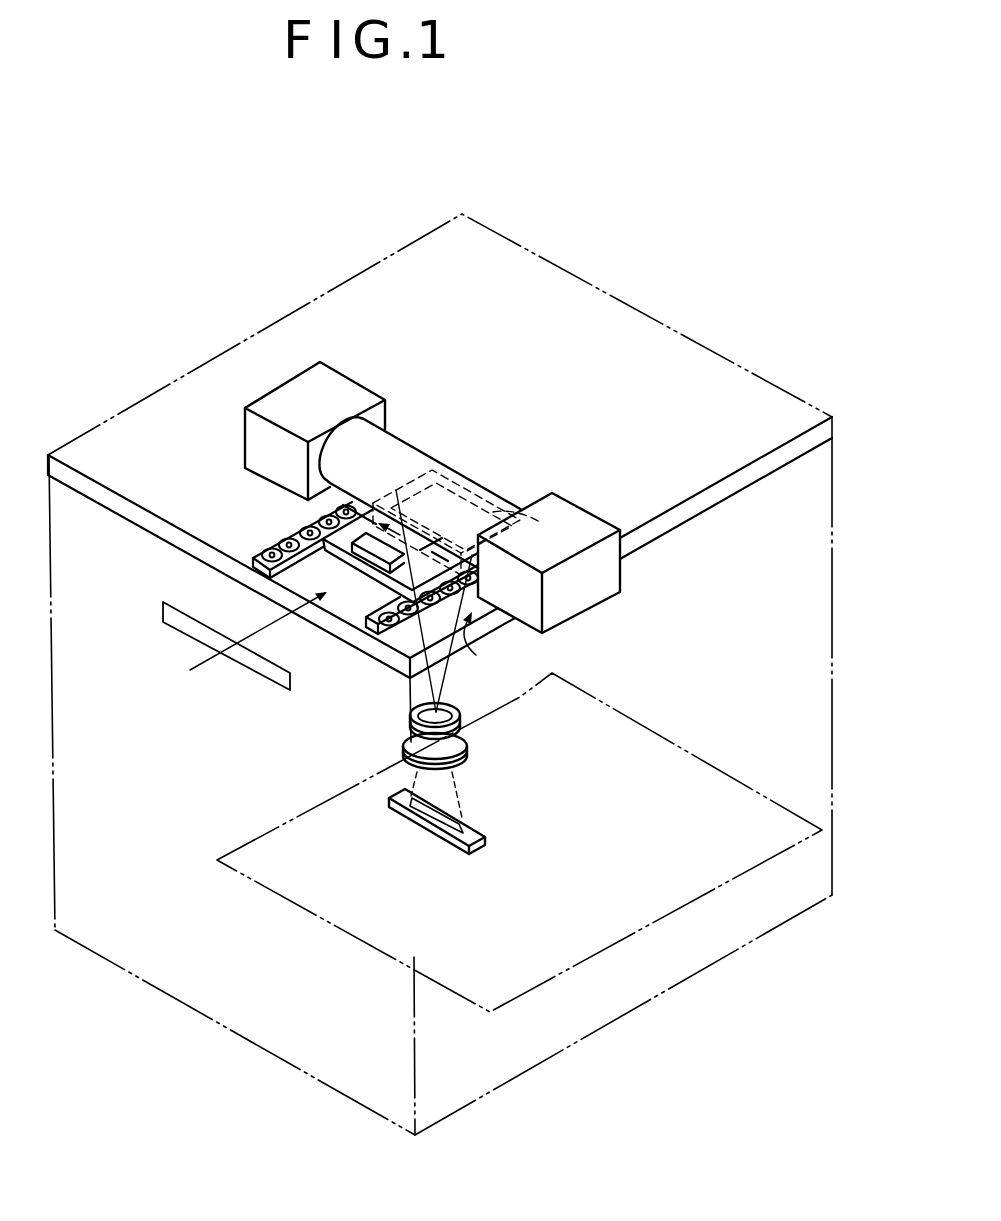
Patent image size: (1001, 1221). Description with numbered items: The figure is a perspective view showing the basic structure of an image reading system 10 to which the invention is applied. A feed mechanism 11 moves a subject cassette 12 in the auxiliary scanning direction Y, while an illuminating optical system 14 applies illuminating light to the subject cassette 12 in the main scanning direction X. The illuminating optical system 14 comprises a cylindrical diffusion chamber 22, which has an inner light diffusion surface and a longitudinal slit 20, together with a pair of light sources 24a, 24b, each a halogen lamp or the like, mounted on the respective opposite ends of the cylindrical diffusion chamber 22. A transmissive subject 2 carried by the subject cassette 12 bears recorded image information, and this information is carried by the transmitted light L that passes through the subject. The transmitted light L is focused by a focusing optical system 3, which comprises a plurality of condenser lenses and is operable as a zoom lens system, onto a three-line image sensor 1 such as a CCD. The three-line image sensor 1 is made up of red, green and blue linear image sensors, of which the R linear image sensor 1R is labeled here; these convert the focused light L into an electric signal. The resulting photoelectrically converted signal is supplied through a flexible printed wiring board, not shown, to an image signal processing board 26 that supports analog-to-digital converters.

The 3-line image sensor 1 is at (445, 858).
The R linear image sensor 1R is at (456, 810).
The transmissive subject 2 is at (368, 552).
The focusing optical system 3 is at (480, 727).
The image reading system 10 is at (665, 147).
The feed mechanism 11 is at (250, 496).
The subject cassette 12 is at (310, 523).
The illuminating optical system 14 is at (462, 437).
The longitudinal slit 20 is at (488, 482).
The cylindrical diffusion chamber 22 is at (401, 450).
The light source 24a is at (343, 392).
The light source 24b is at (585, 522).
The image signal processing board 26 is at (793, 815).
The transmitted light L is at (462, 782).
The main scanning direction X is at (378, 569).
The auxiliary scanning direction Y is at (343, 636).